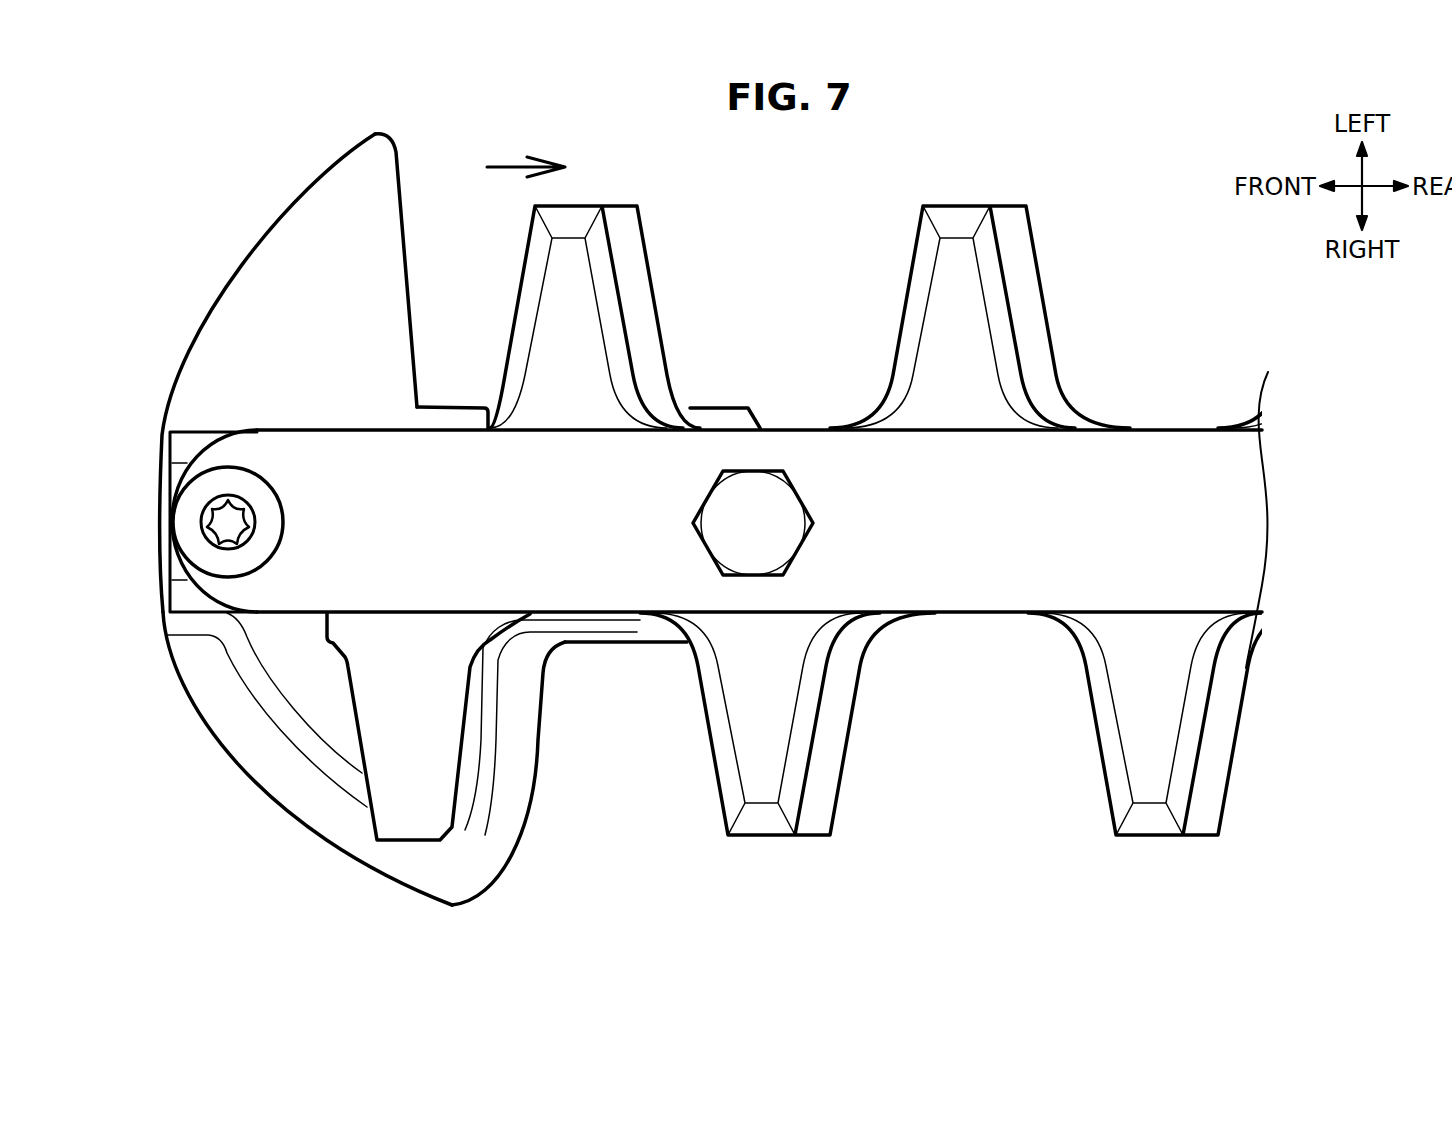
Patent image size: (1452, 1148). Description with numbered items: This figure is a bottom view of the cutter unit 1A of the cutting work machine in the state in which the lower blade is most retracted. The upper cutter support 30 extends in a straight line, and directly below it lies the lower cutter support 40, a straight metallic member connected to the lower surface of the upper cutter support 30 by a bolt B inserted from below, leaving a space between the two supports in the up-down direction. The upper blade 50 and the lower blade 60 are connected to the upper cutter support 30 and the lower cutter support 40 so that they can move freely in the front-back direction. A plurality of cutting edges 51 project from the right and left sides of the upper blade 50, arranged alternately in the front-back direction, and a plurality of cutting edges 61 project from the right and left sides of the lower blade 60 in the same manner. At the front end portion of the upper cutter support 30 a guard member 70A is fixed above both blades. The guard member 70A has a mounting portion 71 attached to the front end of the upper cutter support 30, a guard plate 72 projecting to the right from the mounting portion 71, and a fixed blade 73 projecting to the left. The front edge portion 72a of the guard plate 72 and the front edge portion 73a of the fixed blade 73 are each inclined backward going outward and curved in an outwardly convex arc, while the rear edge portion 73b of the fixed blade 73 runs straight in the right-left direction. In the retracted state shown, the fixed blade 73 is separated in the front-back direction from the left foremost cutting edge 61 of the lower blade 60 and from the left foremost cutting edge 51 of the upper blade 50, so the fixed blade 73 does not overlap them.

The hedge trimmer blade unit 1A is at (1132, 187).
The upper cutter support 30 is at (197, 442).
The lower cutter support 40 is at (1132, 462).
The upper blade 50 is at (684, 315).
The cutting edge 51 is at (637, 248).
The lower blade 60 is at (884, 316).
The cutting edge 61 is at (602, 256).
The guard member 70A is at (303, 875).
The mounting portion 71 is at (640, 635).
The guard plate 72 is at (497, 855).
The front edge portion 72a is at (238, 767).
The fixed blade 73 is at (270, 302).
The front edge portion 73a is at (283, 208).
The rear edge portion 73b is at (402, 210).
The bolt B is at (190, 522).